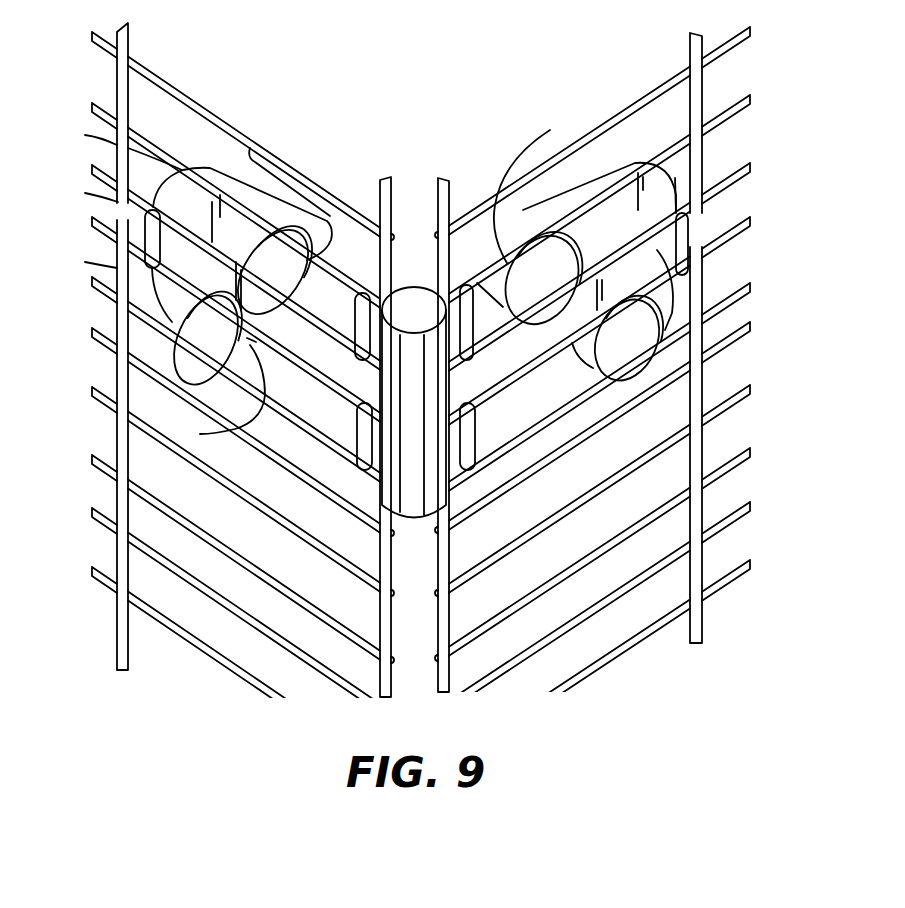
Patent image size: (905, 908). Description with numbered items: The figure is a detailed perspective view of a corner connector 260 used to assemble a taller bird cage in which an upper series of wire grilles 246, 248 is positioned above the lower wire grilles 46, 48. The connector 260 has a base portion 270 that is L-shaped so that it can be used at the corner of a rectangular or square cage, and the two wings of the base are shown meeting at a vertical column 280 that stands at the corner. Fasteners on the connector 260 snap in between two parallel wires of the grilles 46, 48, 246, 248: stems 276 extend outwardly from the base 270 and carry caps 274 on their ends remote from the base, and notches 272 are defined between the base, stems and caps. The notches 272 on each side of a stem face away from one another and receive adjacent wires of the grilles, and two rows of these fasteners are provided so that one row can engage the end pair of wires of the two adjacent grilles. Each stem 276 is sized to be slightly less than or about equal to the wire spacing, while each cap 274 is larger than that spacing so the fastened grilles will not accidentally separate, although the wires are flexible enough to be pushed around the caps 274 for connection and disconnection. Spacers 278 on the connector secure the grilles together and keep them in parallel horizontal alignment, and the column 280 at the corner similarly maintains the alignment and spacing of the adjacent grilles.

The wire grille 46 is at (635, 655).
The wire grille 48 is at (116, 346).
The wire grille 246 is at (665, 85).
The wire grille 248 is at (152, 70).
The connector 260 is at (692, 173).
The base portion 270 is at (177, 195).
The notch 272 is at (250, 148).
The cap 274 is at (180, 300).
The stem 276 is at (200, 434).
The spacer 278 is at (146, 214).
The column 280 is at (428, 300).